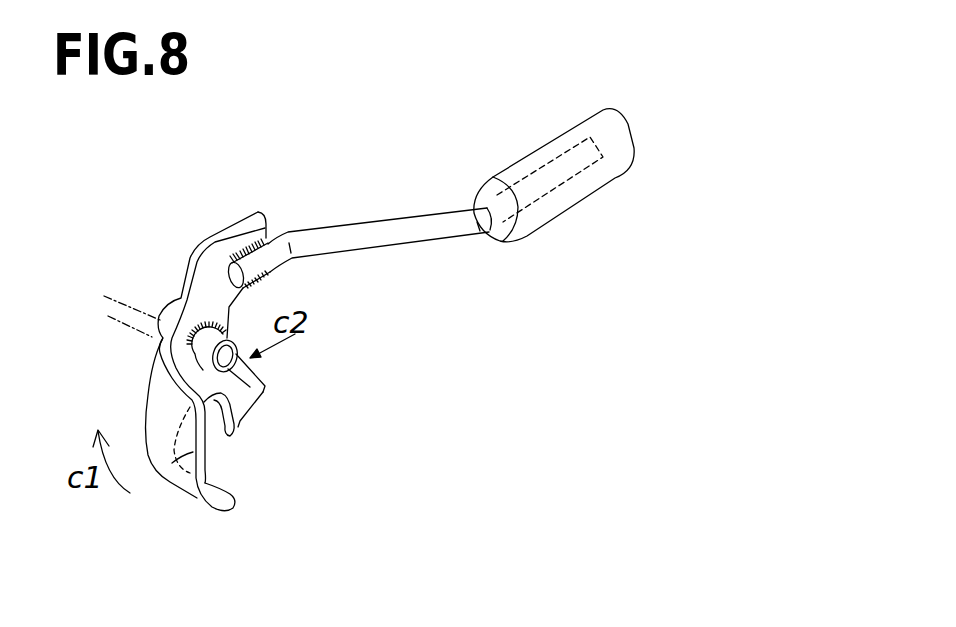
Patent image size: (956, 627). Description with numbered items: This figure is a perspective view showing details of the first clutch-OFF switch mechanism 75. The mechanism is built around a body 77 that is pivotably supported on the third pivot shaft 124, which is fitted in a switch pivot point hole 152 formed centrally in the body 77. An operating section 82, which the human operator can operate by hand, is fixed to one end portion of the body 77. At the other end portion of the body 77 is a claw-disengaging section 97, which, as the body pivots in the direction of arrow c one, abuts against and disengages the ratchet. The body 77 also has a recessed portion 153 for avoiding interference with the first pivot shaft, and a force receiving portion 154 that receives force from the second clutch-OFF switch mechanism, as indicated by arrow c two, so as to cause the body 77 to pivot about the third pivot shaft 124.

The first clutch-OFF switch mechanism 75 is at (276, 185).
The body 77 is at (212, 260).
The operating section 82 is at (542, 146).
The claw-disengaging section 97 is at (194, 452).
The third pivot shaft 124 is at (126, 284).
The switch pivot point hole 152 is at (262, 410).
The recessed portion 153 is at (224, 441).
The force receiving portion 154 is at (258, 372).